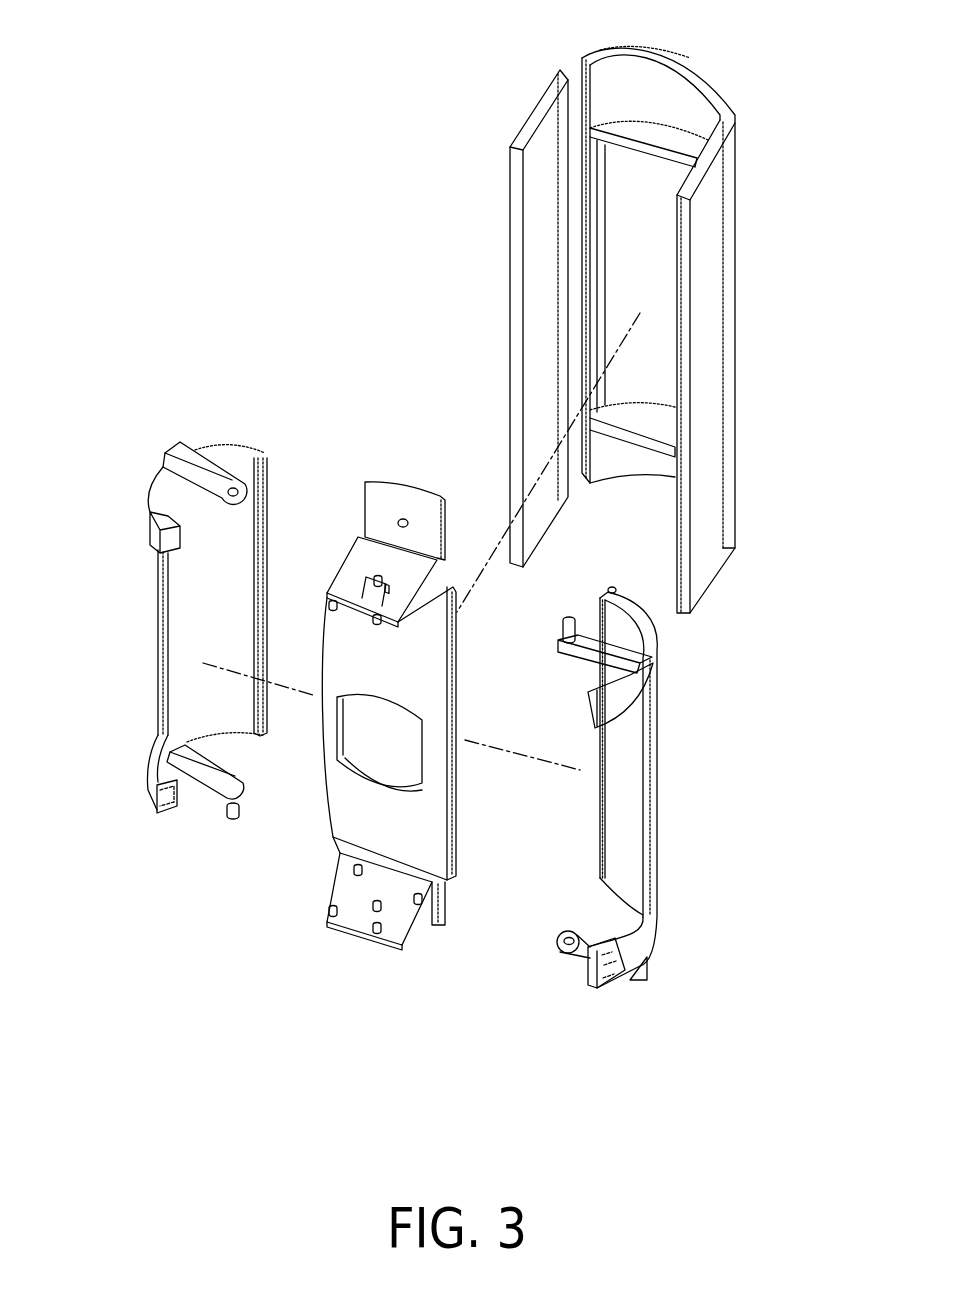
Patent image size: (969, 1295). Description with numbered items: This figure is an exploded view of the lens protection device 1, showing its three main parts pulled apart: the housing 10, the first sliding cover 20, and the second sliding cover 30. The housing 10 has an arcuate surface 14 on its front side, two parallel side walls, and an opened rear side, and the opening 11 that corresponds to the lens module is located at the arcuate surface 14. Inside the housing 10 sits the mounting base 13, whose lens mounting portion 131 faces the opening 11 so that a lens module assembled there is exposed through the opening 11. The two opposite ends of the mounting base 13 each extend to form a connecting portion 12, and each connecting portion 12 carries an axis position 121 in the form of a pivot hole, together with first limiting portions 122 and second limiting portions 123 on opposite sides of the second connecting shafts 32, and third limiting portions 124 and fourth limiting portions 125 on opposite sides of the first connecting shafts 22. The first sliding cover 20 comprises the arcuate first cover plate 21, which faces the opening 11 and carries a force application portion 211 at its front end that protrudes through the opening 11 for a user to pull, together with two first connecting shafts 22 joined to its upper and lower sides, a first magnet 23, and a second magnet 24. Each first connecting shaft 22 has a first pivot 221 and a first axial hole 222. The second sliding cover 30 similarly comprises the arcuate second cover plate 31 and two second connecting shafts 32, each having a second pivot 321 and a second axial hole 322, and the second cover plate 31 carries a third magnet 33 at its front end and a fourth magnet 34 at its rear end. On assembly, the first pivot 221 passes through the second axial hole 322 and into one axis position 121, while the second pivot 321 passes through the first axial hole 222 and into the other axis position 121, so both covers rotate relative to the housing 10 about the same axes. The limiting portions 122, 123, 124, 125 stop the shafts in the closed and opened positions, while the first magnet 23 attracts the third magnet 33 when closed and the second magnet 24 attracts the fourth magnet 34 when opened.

The lens protection device 1 is at (757, 80).
The housing 10 is at (728, 147).
The opening 11 is at (657, 192).
The connecting portion 12 is at (403, 582).
The mounting base 13 is at (402, 483).
The arcuate surface 14 is at (643, 45).
The axis position 121 is at (377, 577).
The first limiting portion 122 is at (355, 866).
The second limiting portion 123 is at (332, 913).
The third limiting portion 124 is at (422, 900).
The fourth limiting portion 125 is at (372, 932).
The lens mounting portion 131 is at (388, 763).
The first sliding cover 20 is at (645, 682).
The first cover plate 21 is at (627, 637).
The force application portion 211 is at (608, 590).
The first connecting shaft 22 is at (592, 648).
The first pivot 221 is at (560, 630).
The first axial hole 222 is at (565, 937).
The first magnet 23 is at (600, 800).
The second magnet 24 is at (592, 693).
The second sliding cover 30 is at (160, 607).
The second cover plate 31 is at (172, 572).
The second connecting shaft 32 is at (180, 447).
The second pivot 321 is at (223, 812).
The second axial hole 322 is at (245, 482).
The third magnet 33 is at (258, 623).
The fourth magnet 34 is at (148, 513).